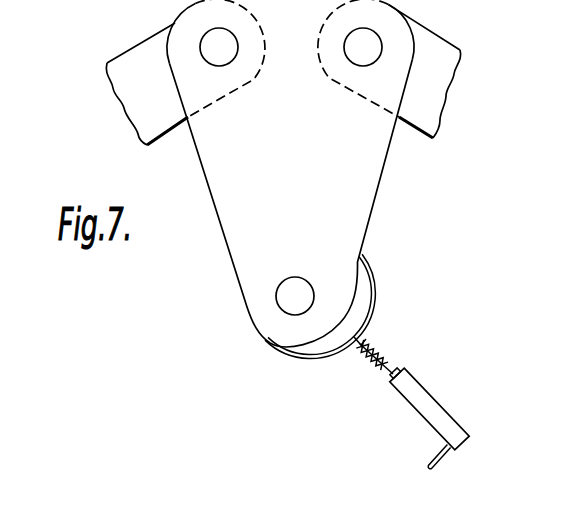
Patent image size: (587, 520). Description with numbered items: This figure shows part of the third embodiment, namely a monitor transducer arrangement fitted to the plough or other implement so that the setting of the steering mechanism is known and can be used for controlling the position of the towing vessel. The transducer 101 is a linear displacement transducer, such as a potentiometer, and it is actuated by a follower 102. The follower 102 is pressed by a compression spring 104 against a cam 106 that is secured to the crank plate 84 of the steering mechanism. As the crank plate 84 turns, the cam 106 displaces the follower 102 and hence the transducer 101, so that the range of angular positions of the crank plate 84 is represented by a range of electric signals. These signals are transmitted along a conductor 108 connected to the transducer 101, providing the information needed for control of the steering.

The crank plate 84 is at (233, 152).
The cam 106 is at (368, 270).
The follower 102 is at (371, 333).
The compression spring 104 is at (376, 362).
The transducer 101 is at (440, 400).
The conductor 108 is at (445, 448).